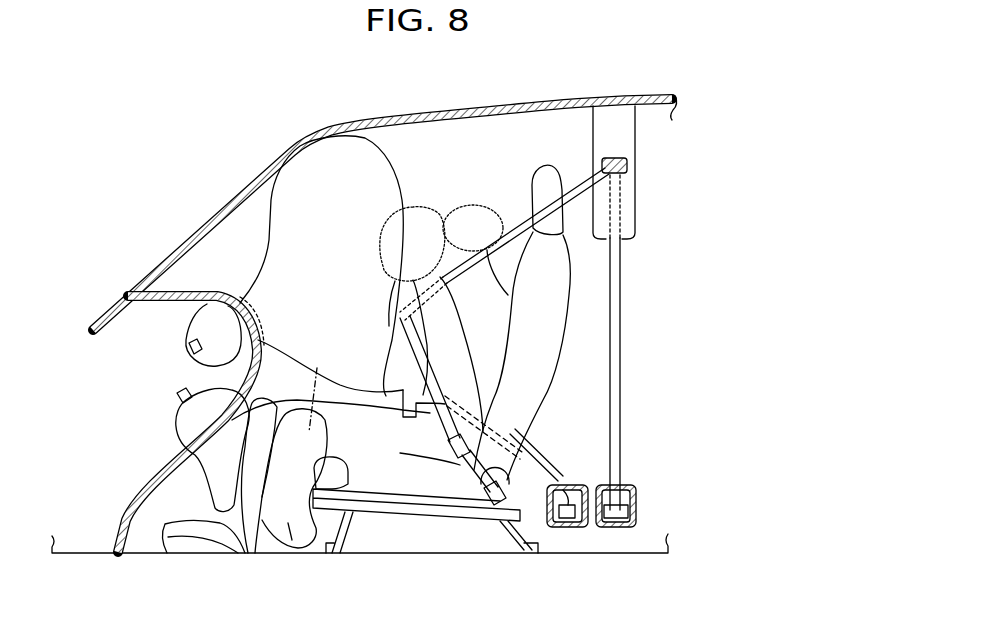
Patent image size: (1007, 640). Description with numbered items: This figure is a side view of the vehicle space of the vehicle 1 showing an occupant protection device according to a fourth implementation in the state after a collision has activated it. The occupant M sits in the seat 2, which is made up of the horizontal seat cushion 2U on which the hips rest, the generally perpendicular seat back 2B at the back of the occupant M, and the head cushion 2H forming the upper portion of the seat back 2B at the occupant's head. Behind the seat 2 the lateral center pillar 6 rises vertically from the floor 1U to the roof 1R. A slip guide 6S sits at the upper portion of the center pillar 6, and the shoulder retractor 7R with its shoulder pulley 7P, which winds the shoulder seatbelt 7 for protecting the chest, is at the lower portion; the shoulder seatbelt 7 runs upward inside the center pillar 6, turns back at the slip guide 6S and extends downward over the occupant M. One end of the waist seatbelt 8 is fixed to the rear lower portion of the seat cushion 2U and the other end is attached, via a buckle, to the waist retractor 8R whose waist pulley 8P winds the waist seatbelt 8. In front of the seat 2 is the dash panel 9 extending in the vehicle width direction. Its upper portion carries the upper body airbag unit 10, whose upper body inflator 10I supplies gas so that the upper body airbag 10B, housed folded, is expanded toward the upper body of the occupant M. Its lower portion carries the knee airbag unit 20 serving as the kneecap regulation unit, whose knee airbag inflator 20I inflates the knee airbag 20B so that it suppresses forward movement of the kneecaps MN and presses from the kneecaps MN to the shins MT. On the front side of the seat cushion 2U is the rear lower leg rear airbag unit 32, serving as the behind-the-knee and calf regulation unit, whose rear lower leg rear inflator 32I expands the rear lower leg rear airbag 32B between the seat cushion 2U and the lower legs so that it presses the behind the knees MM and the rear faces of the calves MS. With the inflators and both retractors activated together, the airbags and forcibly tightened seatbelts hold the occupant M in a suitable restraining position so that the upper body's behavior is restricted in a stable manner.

The vehicle 1 is at (452, 92).
The roof 1R is at (557, 100).
The floor 1U is at (422, 553).
The seat 2 is at (681, 262).
The head cushion 2H is at (590, 238).
The seat back 2B is at (542, 307).
The seat cushion 2U is at (493, 437).
The center pillar 6 is at (617, 141).
The slip guide 6S is at (629, 166).
The shoulder seatbelt 7 is at (522, 220).
The shoulder retractor 7R is at (637, 492).
The shoulder pulley 7P is at (637, 511).
The waist seatbelt 8 is at (450, 443).
The waist retractor 8R is at (568, 483).
The waist pulley 8P is at (562, 519).
The dash panel 9 is at (199, 297).
The upper body airbag unit 10 is at (182, 326).
The upper body inflator 10I is at (188, 349).
The upper body airbag 10B is at (267, 247).
The knee airbag unit 20 is at (166, 407).
The knee airbag inflator 20I is at (177, 394).
The knee airbag 20B is at (198, 476).
The rear lower leg rear airbag unit 32 is at (377, 495).
The rear lower leg rear inflator 32I is at (360, 471).
The rear lower leg rear airbag 32B is at (286, 552).
The occupant M is at (430, 207).
The behind the knees MM is at (331, 386).
The kneecaps MN is at (289, 399).
The calves MS is at (249, 555).
The shins MT is at (227, 522).